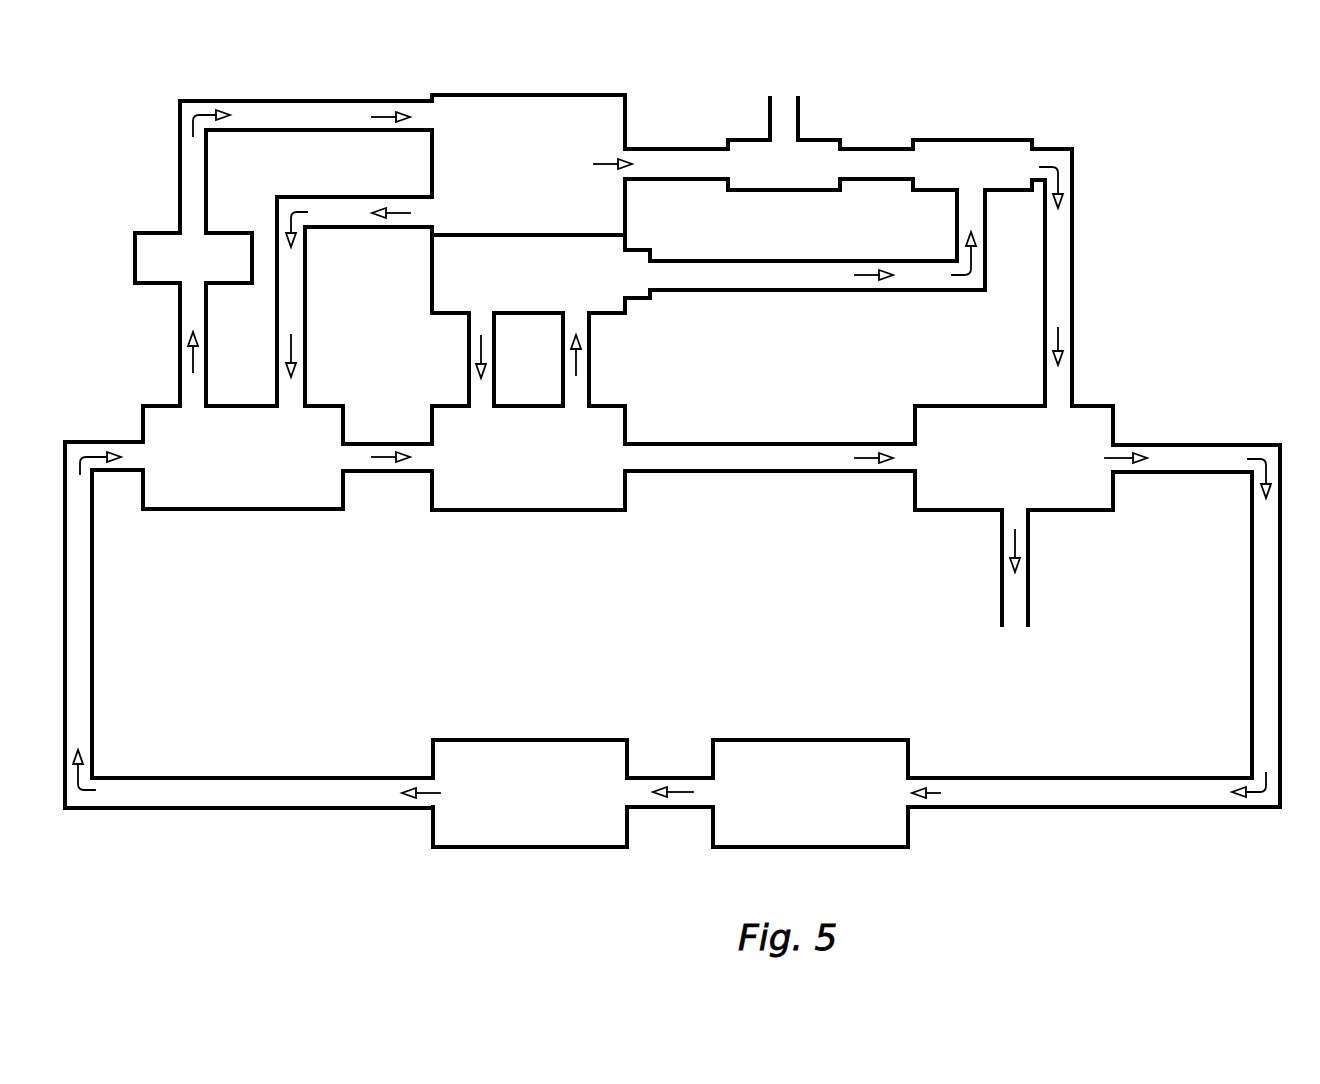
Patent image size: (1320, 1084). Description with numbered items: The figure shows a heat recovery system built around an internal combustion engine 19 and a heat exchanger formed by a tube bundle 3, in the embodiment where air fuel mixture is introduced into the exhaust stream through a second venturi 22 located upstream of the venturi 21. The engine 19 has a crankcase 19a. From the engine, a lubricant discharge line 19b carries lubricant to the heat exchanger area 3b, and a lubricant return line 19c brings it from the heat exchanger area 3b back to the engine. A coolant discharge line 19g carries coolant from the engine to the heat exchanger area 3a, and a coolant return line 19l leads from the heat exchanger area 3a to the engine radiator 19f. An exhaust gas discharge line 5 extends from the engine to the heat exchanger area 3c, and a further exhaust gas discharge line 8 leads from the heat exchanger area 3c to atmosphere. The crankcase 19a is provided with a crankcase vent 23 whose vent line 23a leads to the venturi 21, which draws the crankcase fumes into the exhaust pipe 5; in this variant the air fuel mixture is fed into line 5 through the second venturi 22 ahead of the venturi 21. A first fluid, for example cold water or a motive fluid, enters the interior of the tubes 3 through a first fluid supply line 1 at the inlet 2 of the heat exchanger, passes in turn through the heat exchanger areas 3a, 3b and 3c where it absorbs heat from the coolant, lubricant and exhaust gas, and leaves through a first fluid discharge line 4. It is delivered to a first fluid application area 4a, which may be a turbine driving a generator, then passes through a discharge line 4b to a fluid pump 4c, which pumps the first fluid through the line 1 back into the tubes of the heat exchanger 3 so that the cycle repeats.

The first fluid supply line 1 is at (86, 535).
The inlet to first engine 2 is at (110, 440).
The tube bundle 3 is at (345, 502).
The heat exchanger area 3a is at (260, 475).
The heat exchanger area 3b is at (553, 475).
The heat exchanger area 3c is at (1036, 475).
The first fluid discharge line 4 is at (1240, 444).
The first fluid application area 4a is at (838, 809).
The discharge line 4b is at (690, 777).
The fluid pump 4c is at (548, 809).
The exhaust gas discharge line 5 is at (1068, 305).
The exhaust gas discharge line 8 is at (1028, 603).
The internal combustion engine 19 is at (546, 183).
The crankcase 19a is at (562, 285).
The lubricant discharge line 19b is at (469, 338).
The lubricant return line 19c is at (563, 332).
The engine radiator 19f is at (215, 279).
The coolant discharge line 19g is at (305, 283).
The coolant return line 19l is at (180, 308).
The venturi 21 is at (990, 187).
The second venturi 22 is at (800, 185).
The crankcase vent 23 is at (652, 299).
The vent line 23a is at (913, 258).